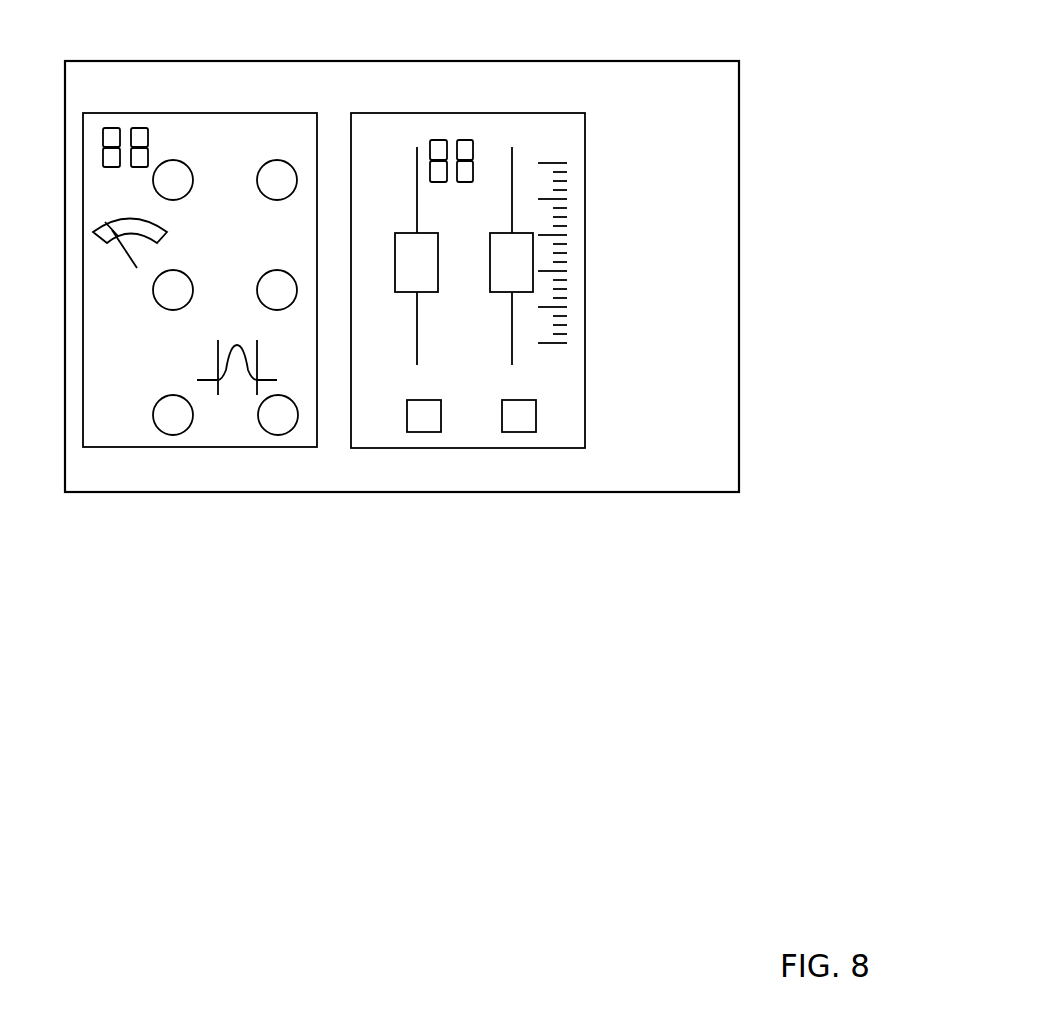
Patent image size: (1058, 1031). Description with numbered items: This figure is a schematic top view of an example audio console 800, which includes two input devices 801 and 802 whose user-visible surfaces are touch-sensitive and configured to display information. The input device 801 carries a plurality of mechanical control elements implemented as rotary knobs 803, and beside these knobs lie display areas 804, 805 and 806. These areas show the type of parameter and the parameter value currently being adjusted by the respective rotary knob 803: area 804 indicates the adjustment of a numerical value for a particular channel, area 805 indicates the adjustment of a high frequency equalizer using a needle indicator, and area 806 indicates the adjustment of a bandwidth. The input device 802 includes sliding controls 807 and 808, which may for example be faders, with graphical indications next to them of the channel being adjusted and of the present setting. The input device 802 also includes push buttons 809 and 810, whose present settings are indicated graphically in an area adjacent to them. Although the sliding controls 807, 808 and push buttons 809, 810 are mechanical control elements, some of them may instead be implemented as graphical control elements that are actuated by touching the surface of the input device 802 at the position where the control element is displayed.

The audio console 800 is at (719, 61).
The input device 801 is at (302, 113).
The input device 802 is at (572, 113).
The rotary knobs 803 is at (186, 165).
The area 804 is at (97, 172).
The area 805 is at (97, 264).
The area 806 is at (233, 435).
The sliding control 807 is at (397, 233).
The sliding control 808 is at (492, 233).
The push button 809 is at (438, 400).
The push button 810 is at (532, 400).